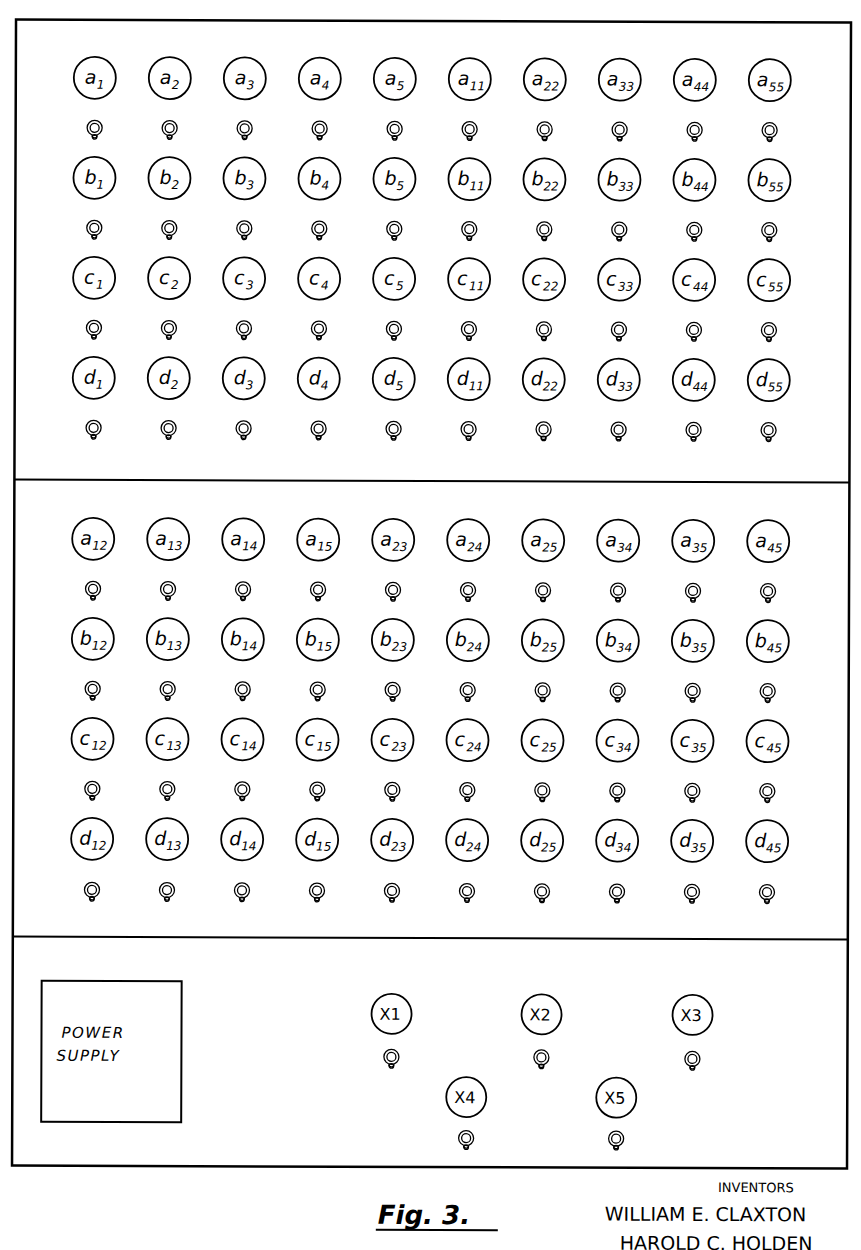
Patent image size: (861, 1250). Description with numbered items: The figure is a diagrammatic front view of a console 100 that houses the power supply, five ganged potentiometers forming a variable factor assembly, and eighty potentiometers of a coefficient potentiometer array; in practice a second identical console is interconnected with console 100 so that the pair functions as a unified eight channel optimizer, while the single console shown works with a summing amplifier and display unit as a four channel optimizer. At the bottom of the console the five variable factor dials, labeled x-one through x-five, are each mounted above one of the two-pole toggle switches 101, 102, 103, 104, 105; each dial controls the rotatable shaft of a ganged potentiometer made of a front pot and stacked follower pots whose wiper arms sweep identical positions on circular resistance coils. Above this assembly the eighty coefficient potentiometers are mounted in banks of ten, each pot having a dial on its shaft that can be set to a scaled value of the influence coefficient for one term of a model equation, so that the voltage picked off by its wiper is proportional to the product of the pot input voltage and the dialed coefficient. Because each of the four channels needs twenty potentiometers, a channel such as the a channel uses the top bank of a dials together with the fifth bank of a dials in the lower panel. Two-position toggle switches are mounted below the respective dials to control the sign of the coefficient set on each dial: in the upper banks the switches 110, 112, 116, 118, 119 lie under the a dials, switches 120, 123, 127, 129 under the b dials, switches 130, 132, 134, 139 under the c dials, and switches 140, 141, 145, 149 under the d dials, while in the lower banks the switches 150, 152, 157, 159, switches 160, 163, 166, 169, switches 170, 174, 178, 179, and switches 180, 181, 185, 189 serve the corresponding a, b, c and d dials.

The console 100 is at (204, 1153).
The two-pole toggle switch 101 is at (403, 1050).
The two-pole toggle switch 102 is at (553, 1050).
The two-pole toggle switch 103 is at (703, 1057).
The two-pole toggle switch 104 is at (478, 1130).
The two-pole toggle switch 105 is at (627, 1135).
The two-position toggle switch 110 is at (87, 125).
The two-position toggle switch 112 is at (243, 121).
The two-position toggle switch 116 is at (541, 123).
The two-position toggle switch 118 is at (690, 123).
The two-position toggle switch 119 is at (776, 130).
The two-position toggle switch 120 is at (88, 226).
The two-position toggle switch 123 is at (316, 224).
The two-position toggle switch 127 is at (616, 224).
The two-position toggle switch 129 is at (777, 229).
The two-position toggle switch 130 is at (88, 325).
The two-position toggle switch 132 is at (240, 324).
The two-position toggle switch 134 is at (395, 322).
The two-position toggle switch 139 is at (776, 329).
The two-position toggle switch 140 is at (88, 425).
The two-position toggle switch 141 is at (170, 422).
The two-position toggle switch 145 is at (466, 425).
The two-position toggle switch 149 is at (776, 429).
The two-position toggle switch 150 is at (88, 587).
The two-position toggle switch 152 is at (243, 583).
The two-position toggle switch 157 is at (615, 586).
The two-position toggle switch 159 is at (776, 590).
The two-position toggle switch 160 is at (88, 686).
The two-position toggle switch 163 is at (320, 684).
The two-position toggle switch 166 is at (545, 686).
The two-position toggle switch 169 is at (776, 690).
The two-position toggle switch 170 is at (88, 791).
The two-position toggle switch 174 is at (395, 786).
The two-position toggle switch 178 is at (690, 788).
The two-position toggle switch 179 is at (775, 788).
The two-position toggle switch 180 is at (88, 887).
The two-position toggle switch 181 is at (170, 884).
The two-position toggle switch 185 is at (466, 893).
The two-position toggle switch 189 is at (769, 887).